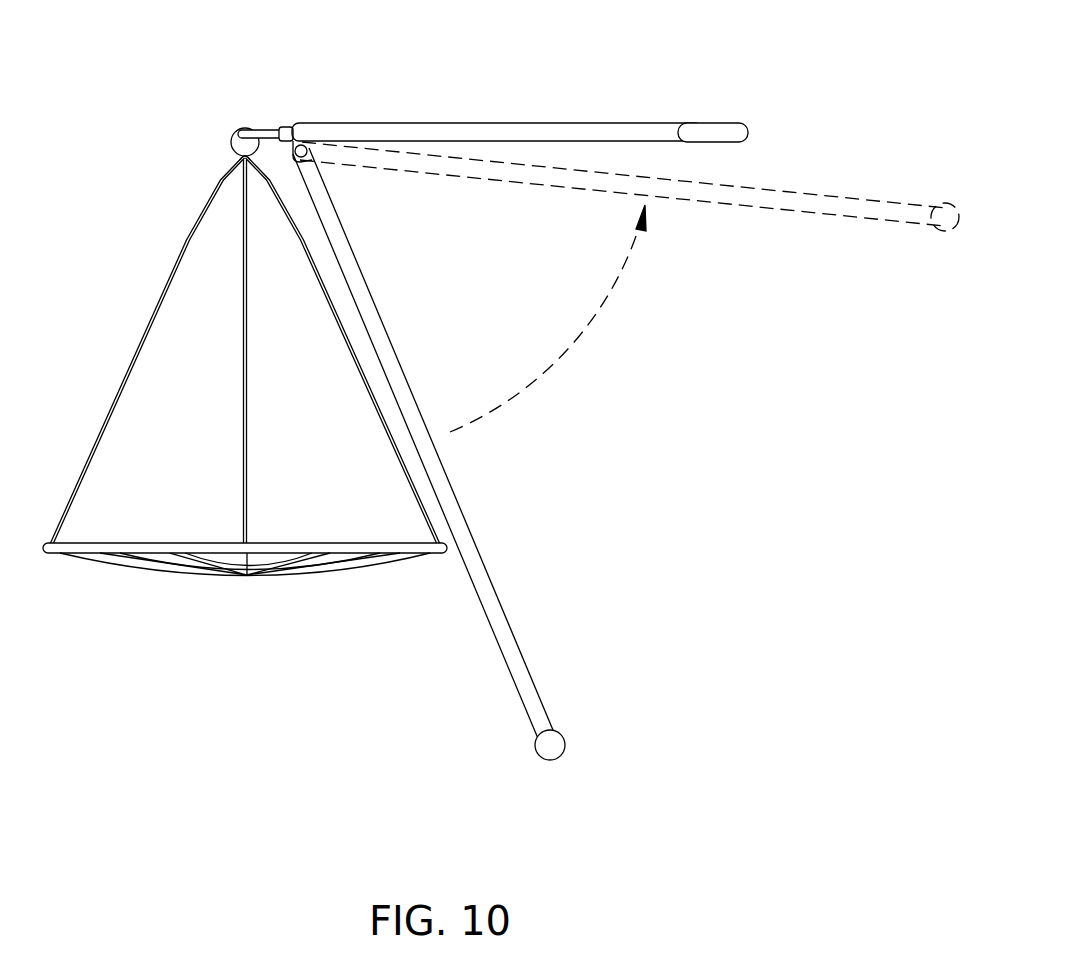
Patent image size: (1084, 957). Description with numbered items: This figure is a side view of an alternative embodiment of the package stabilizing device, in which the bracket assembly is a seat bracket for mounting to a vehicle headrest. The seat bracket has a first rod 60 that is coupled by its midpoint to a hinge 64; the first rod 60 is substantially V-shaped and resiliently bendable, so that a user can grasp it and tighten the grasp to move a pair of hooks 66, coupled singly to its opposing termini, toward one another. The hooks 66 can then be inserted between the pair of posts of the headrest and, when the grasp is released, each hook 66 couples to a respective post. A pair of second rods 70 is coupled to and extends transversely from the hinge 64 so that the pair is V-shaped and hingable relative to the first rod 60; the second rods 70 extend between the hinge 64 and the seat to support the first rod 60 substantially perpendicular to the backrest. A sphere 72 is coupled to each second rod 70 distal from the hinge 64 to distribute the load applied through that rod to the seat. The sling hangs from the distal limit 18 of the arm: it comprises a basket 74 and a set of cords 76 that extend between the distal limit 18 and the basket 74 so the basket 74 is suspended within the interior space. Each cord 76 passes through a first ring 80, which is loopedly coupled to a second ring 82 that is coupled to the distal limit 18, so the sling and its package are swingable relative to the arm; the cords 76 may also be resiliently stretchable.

The distal limit 18 is at (316, 144).
The first rod 60 is at (527, 122).
The hinge 64 is at (285, 130).
The hooks 66 is at (713, 131).
The second rods 70 is at (480, 582).
The sphere 72 is at (552, 748).
The basket 74 is at (202, 545).
The cords 76 is at (243, 335).
The first ring 80 is at (236, 143).
The second ring 82 is at (258, 128).